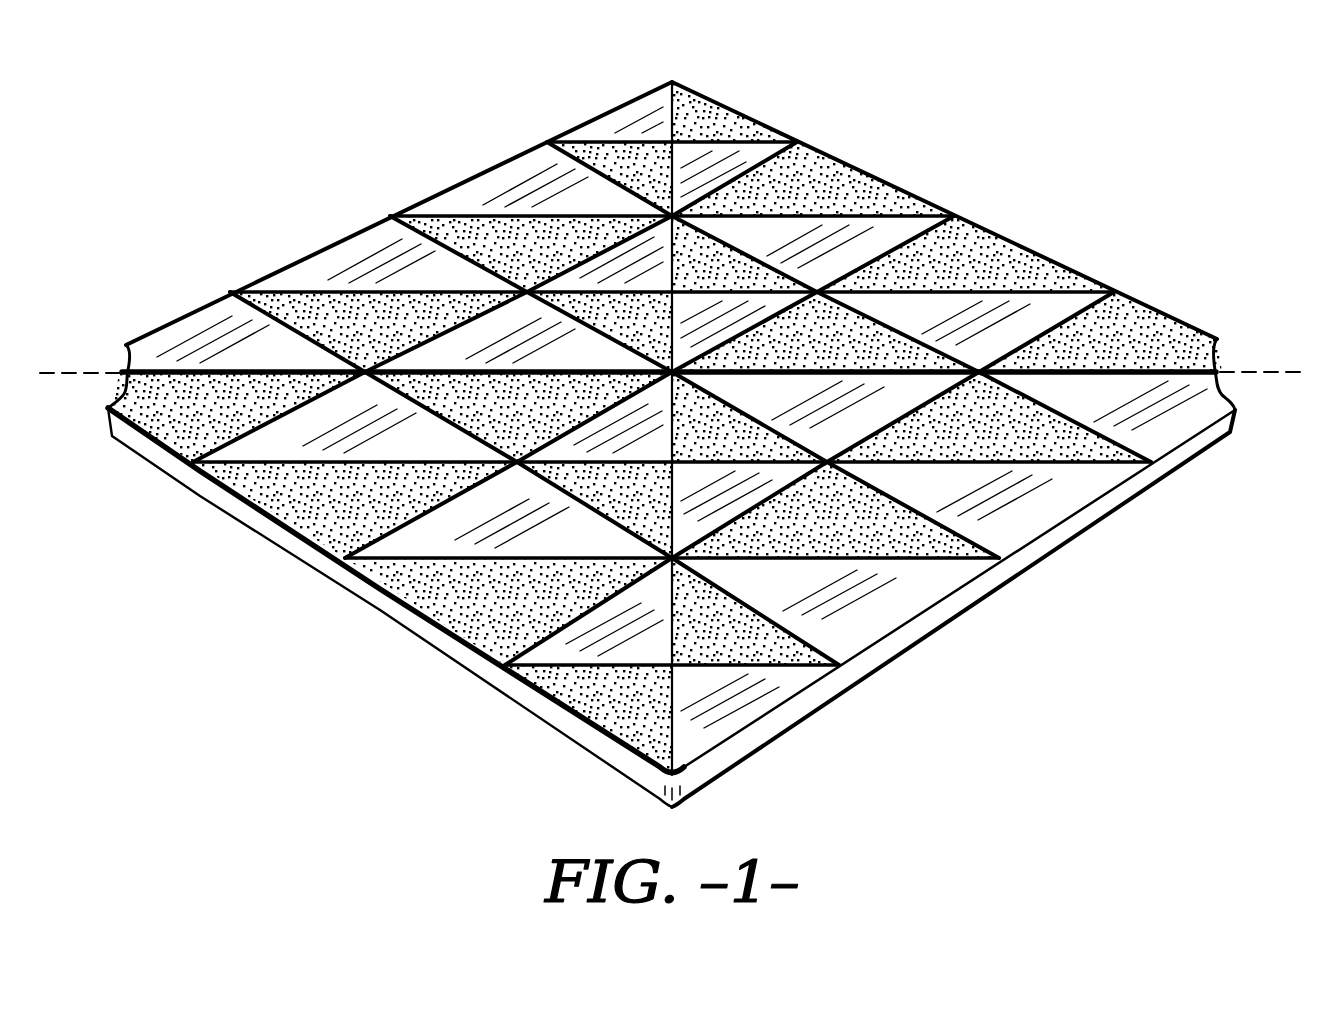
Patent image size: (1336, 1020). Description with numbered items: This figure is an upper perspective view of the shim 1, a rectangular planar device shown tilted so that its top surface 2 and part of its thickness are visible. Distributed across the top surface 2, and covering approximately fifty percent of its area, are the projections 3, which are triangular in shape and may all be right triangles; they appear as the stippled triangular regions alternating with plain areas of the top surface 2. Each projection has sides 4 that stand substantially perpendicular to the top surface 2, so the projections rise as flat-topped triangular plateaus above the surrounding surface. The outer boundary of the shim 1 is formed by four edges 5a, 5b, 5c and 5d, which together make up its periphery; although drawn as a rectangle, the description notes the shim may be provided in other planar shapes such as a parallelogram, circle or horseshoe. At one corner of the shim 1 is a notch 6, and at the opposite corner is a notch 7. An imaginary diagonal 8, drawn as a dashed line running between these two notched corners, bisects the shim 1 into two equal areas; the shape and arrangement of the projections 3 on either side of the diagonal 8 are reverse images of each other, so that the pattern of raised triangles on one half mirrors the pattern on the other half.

The shim 1 is at (668, 409).
The top surface 2 is at (513, 177).
The projections 3 is at (313, 307).
The sides 4 is at (933, 555).
The edge 5a is at (1090, 515).
The edge 5b is at (395, 607).
The edge 5c is at (350, 235).
The edge 5d is at (1030, 252).
The notch 6 is at (124, 363).
The notch 7 is at (1223, 392).
The imaginary diagonal 8 is at (67, 376).